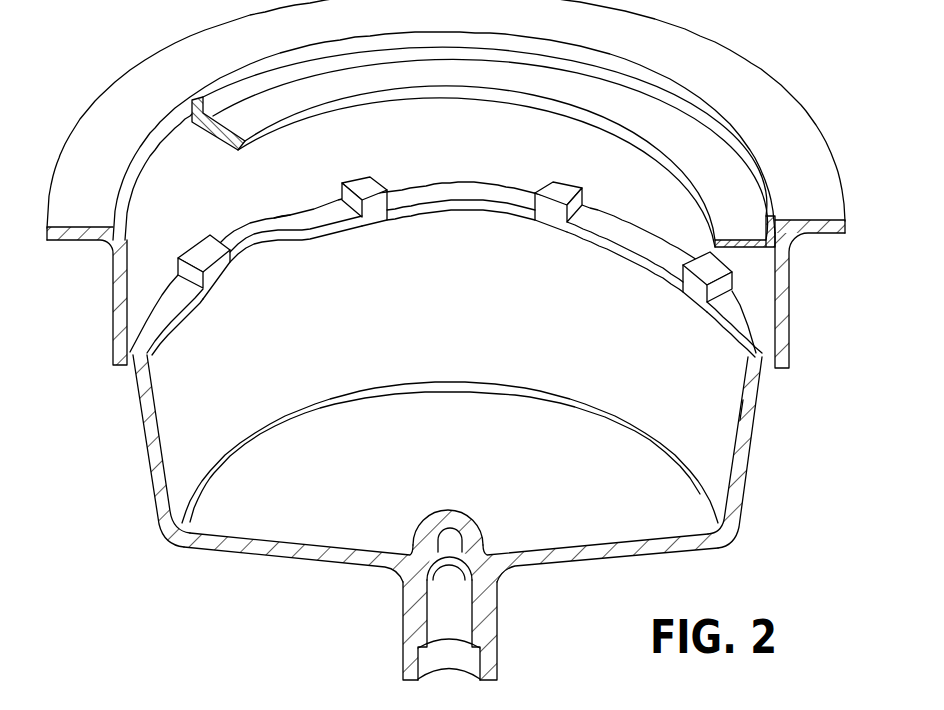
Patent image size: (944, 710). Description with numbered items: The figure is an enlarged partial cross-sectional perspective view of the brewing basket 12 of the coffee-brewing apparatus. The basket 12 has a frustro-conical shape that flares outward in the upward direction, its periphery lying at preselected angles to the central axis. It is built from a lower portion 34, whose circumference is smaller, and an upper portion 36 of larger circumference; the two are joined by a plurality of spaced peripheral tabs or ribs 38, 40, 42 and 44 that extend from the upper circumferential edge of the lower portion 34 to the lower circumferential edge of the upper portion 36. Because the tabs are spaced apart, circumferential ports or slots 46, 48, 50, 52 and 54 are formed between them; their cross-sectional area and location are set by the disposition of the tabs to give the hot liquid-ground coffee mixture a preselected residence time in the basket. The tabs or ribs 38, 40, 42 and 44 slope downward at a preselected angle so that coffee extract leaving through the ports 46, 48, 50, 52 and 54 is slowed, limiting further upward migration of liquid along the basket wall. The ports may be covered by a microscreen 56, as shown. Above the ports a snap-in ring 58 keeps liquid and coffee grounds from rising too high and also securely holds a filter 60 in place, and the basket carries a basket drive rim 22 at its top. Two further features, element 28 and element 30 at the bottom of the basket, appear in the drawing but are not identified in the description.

The basket 12 is at (412, 311).
The basket drive rim 22 is at (818, 121).
The central boss 28 is at (410, 562).
The bottom wall 30 is at (603, 556).
The lower portion 34 is at (147, 460).
The upper portion 36 is at (112, 322).
The tab or rib 38 is at (199, 240).
The tab or rib 40 is at (358, 183).
The tab or rib 42 is at (564, 183).
The tab or rib 44 is at (706, 271).
The port or slot 46 is at (181, 282).
The port or slot 48 is at (324, 203).
The port or slot 50 is at (480, 192).
The port or slot 52 is at (624, 232).
The port or slot 54 is at (746, 324).
The microscreen 56 is at (290, 213).
The snap-in ring 58 is at (682, 166).
The filter 60 is at (722, 408).